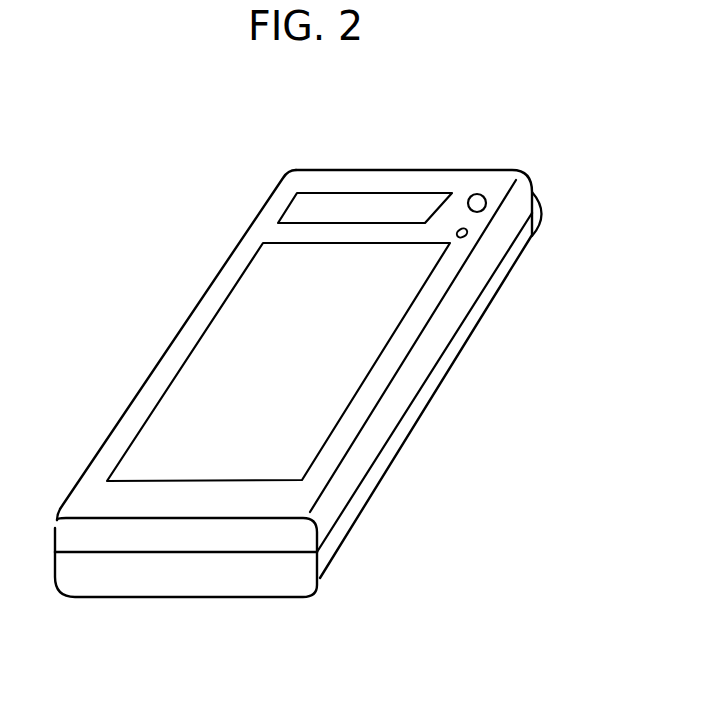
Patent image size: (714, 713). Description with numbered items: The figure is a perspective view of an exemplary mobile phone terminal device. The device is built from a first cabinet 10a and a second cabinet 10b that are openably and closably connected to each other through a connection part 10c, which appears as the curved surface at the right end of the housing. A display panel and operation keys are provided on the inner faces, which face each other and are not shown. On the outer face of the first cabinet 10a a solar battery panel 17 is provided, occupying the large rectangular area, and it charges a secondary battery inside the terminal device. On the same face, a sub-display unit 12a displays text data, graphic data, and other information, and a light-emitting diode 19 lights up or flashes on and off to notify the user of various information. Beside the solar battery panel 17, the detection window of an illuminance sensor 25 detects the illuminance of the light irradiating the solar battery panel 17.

The first cabinet 10a is at (350, 513).
The second cabinet 10b is at (320, 513).
The connection part 10c is at (541, 205).
The sub-display unit 12a is at (322, 180).
The solar battery panel 17 is at (204, 362).
The light-emitting diode 19 is at (480, 194).
The illuminance sensor 25 is at (467, 233).